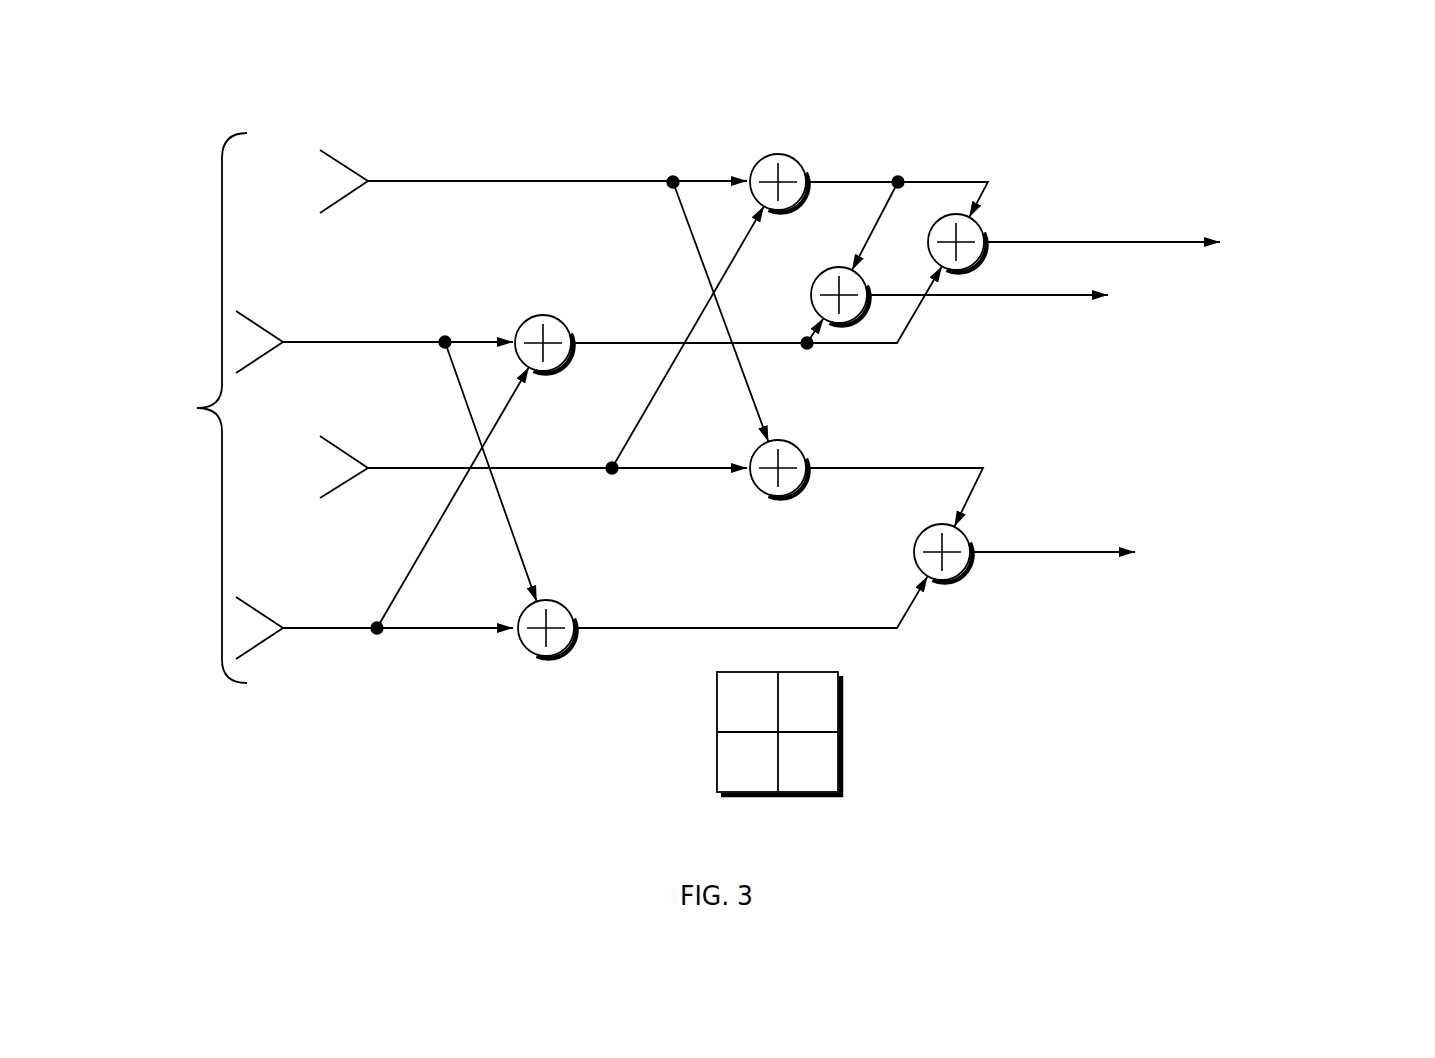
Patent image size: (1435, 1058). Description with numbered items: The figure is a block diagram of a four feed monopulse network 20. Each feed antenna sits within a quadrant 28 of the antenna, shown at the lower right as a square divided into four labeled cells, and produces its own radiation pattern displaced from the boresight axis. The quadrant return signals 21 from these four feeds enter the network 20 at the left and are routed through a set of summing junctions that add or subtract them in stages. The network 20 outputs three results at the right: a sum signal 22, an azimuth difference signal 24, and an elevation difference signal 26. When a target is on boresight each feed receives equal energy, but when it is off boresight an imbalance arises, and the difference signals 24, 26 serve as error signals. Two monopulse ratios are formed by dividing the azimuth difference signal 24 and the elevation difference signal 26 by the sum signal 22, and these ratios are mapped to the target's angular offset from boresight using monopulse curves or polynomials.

The four feed monopulse network 20 is at (1087, 92).
The quadrant return signals 21 is at (140, 457).
The sum signal 22 is at (1372, 256).
The azimuth difference signal 24 is at (1254, 356).
The elevation difference signal 26 is at (1293, 611).
The quadrant 28 is at (867, 743).